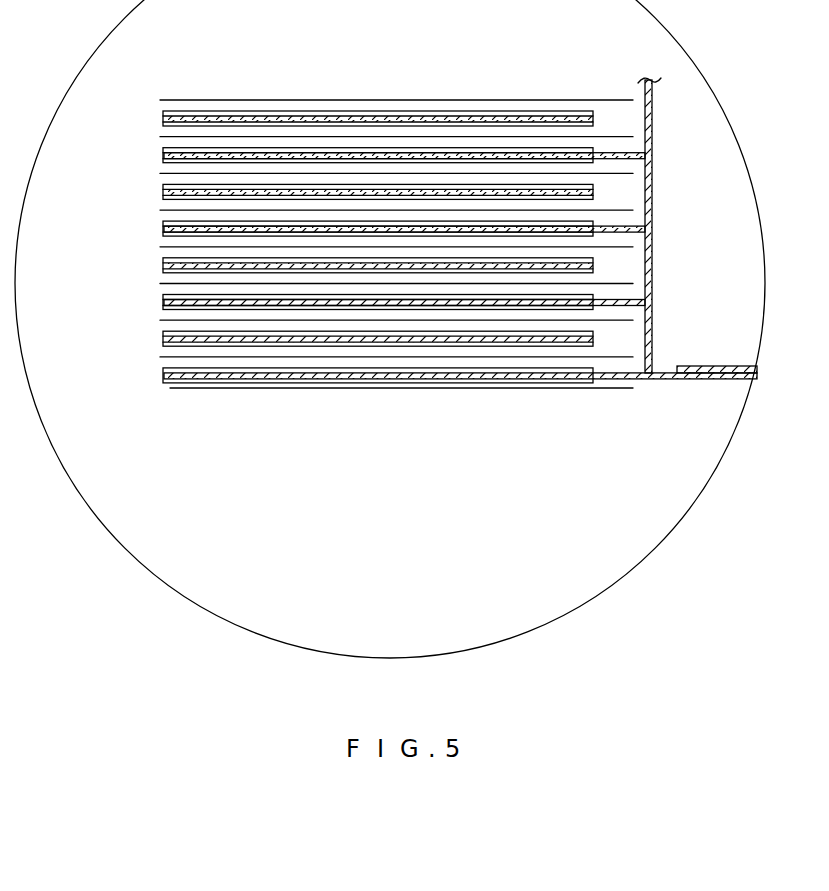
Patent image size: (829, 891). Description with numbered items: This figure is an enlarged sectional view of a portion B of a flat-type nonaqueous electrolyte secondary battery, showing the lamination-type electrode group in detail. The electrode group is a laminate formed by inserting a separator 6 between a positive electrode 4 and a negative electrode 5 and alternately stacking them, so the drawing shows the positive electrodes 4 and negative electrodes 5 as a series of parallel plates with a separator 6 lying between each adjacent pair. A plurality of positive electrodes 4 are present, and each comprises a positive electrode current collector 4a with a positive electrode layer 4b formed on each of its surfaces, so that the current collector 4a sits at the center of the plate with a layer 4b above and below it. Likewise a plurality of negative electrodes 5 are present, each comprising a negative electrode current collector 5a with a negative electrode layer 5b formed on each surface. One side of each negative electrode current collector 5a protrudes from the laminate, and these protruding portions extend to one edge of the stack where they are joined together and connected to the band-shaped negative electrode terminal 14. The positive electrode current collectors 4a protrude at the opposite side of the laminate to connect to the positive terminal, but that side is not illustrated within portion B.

The positive electrode 4 is at (152, 122).
The positive electrode current collector 4a is at (165, 340).
The positive electrode layer 4b is at (163, 334).
The negative electrode 5 is at (152, 159).
The negative electrode current collector 5a is at (622, 151).
The negative electrode layer 5b is at (164, 370).
The separator 6 is at (460, 100).
The negative electrode terminal 14 is at (710, 366).
The portion B is at (653, 551).